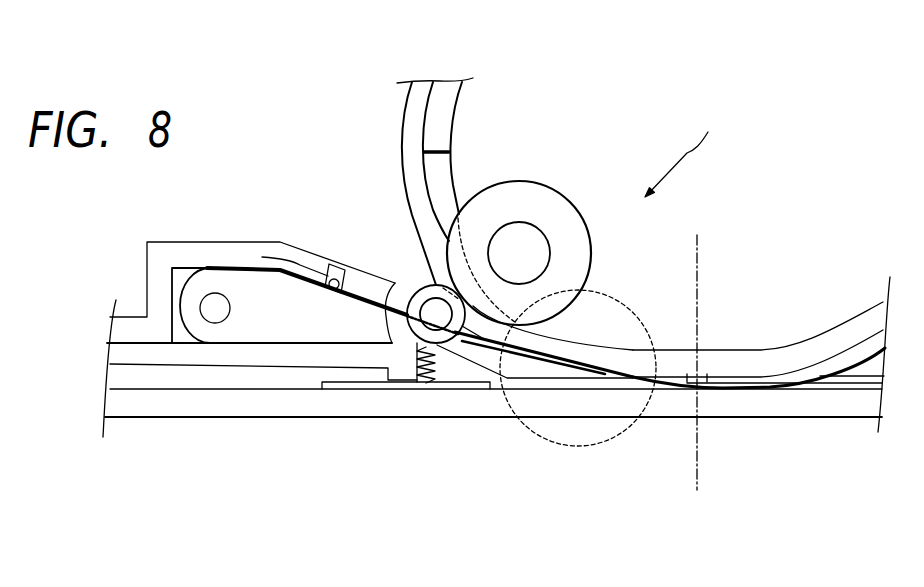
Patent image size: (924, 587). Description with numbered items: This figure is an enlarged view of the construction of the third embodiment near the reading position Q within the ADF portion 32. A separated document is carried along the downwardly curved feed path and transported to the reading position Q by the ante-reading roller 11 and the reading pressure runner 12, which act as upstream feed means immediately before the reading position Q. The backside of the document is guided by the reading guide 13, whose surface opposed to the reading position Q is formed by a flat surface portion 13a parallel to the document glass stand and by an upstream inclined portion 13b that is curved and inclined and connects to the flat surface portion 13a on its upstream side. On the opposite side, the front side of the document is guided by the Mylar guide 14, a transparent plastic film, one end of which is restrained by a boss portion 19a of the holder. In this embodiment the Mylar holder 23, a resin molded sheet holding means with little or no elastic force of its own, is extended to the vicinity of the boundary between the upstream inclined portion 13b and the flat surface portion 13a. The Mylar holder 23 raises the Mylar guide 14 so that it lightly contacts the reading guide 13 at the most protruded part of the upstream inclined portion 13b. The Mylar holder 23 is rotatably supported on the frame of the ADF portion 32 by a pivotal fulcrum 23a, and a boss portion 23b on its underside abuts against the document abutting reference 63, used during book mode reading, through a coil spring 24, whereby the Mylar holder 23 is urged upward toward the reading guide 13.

The ante-reading roller 11 is at (552, 205).
The reading pressure runner 12 is at (418, 296).
The reading guide 13 is at (435, 187).
The flat surface portion 13a is at (717, 370).
The upstream inclined portion 13b is at (590, 440).
The Mylar guide 14 is at (646, 370).
The boss portion 19a is at (312, 282).
The Mylar holder 23 is at (373, 333).
The pivotal fulcrum 23a is at (212, 317).
The boss portion 23b is at (413, 360).
The coil spring 24 is at (427, 383).
The ADF portion 32 is at (686, 153).
The document abutting reference 63 is at (473, 385).
The reading position Q is at (697, 417).